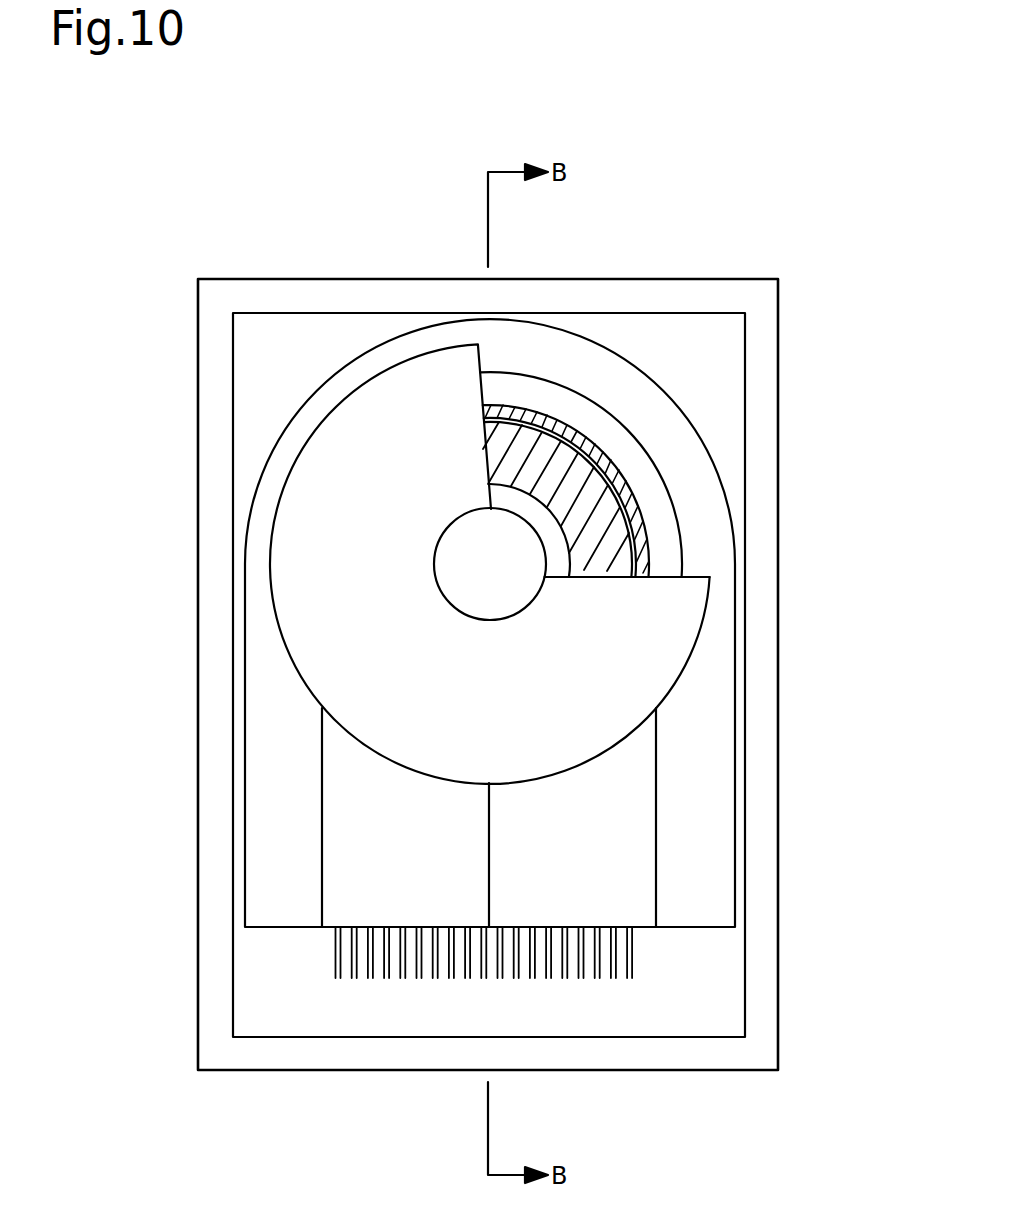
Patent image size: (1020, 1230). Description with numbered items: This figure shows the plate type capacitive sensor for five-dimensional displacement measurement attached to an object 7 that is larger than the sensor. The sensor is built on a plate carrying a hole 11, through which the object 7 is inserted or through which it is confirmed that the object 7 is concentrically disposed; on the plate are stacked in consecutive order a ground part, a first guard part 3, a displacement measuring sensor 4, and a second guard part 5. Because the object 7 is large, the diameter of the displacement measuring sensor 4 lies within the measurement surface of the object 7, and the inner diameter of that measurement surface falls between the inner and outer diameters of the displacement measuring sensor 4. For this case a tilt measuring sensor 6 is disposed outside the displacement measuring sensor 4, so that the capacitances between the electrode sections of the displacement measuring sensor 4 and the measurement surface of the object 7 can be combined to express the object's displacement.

The first guard part 3 is at (692, 865).
The displacement measuring sensor 4 is at (575, 480).
The second guard part 5 is at (628, 787).
The tilt measuring sensor 6 is at (640, 532).
The object 7 is at (373, 618).
The hole 11 is at (488, 564).